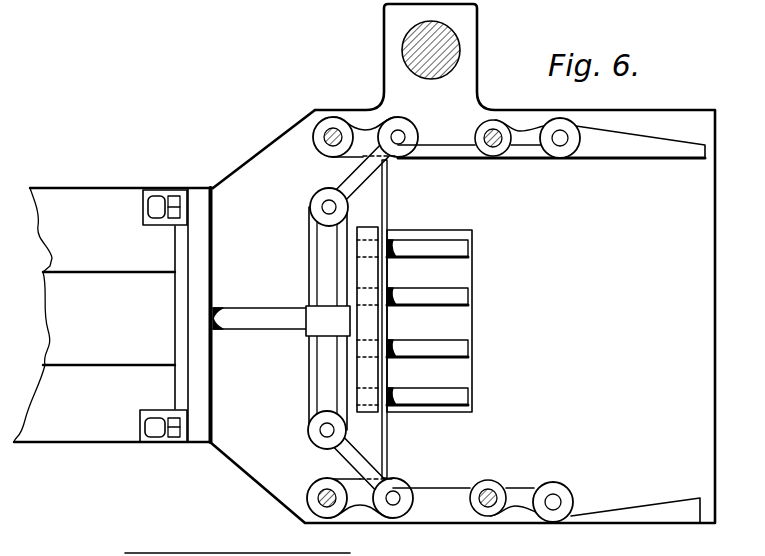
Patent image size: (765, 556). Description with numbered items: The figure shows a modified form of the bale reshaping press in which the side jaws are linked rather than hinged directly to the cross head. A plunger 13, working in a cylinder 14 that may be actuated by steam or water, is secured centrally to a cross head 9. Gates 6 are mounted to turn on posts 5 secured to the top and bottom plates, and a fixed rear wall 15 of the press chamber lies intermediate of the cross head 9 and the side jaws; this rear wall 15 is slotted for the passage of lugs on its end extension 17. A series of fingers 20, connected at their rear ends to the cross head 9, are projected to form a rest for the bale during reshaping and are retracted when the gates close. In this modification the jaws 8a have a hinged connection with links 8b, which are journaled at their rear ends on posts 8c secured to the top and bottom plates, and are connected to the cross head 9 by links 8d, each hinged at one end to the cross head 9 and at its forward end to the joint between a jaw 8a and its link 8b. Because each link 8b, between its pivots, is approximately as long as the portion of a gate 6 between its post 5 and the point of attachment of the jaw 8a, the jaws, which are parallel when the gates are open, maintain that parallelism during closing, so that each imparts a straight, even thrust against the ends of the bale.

The post 5 is at (494, 136).
The gate 6 is at (628, 152).
The jaw 8a is at (446, 488).
The link 8b is at (358, 132).
The post 8c is at (327, 498).
The link 8d is at (386, 453).
The cross head 9 is at (322, 343).
The plunger 13 is at (238, 316).
The cylinder 14 is at (113, 315).
The rear wall 15 is at (370, 277).
The end extension 17 is at (386, 220).
The fingers 20 is at (430, 297).